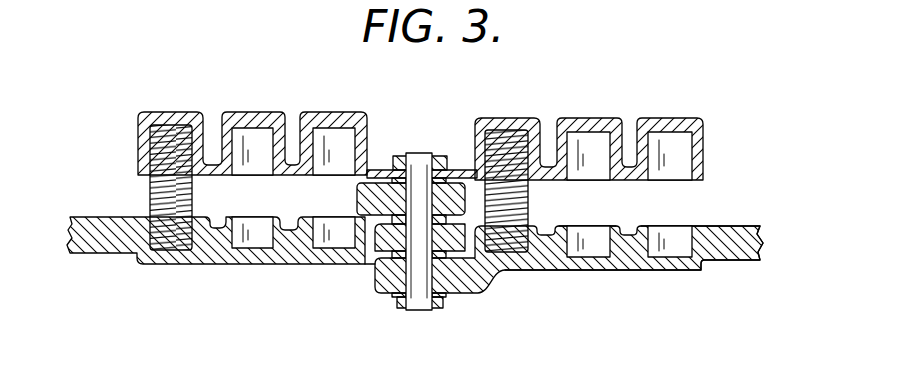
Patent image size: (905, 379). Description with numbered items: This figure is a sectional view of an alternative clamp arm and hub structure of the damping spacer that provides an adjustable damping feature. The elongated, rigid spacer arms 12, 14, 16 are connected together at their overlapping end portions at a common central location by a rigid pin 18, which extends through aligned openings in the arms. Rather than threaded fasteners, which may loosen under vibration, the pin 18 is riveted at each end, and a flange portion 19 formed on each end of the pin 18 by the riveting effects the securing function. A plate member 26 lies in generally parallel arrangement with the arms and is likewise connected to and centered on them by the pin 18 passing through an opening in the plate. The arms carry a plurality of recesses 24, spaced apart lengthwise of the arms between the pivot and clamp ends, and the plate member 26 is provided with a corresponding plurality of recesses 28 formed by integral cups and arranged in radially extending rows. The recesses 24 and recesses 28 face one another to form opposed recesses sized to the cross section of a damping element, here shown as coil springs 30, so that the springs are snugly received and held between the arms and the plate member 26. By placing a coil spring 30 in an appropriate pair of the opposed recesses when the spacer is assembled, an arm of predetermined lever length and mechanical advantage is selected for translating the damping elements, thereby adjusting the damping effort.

The spacer arm 12 is at (80, 217).
The spacer arm 14 is at (376, 247).
The spacer arm 16 is at (736, 226).
The rigid pin 18 is at (416, 178).
The flange portion 19 is at (432, 152).
The recess 24 is at (328, 243).
The plate member 26 is at (380, 168).
The recess 28 is at (323, 165).
The coil spring 30 is at (150, 196).